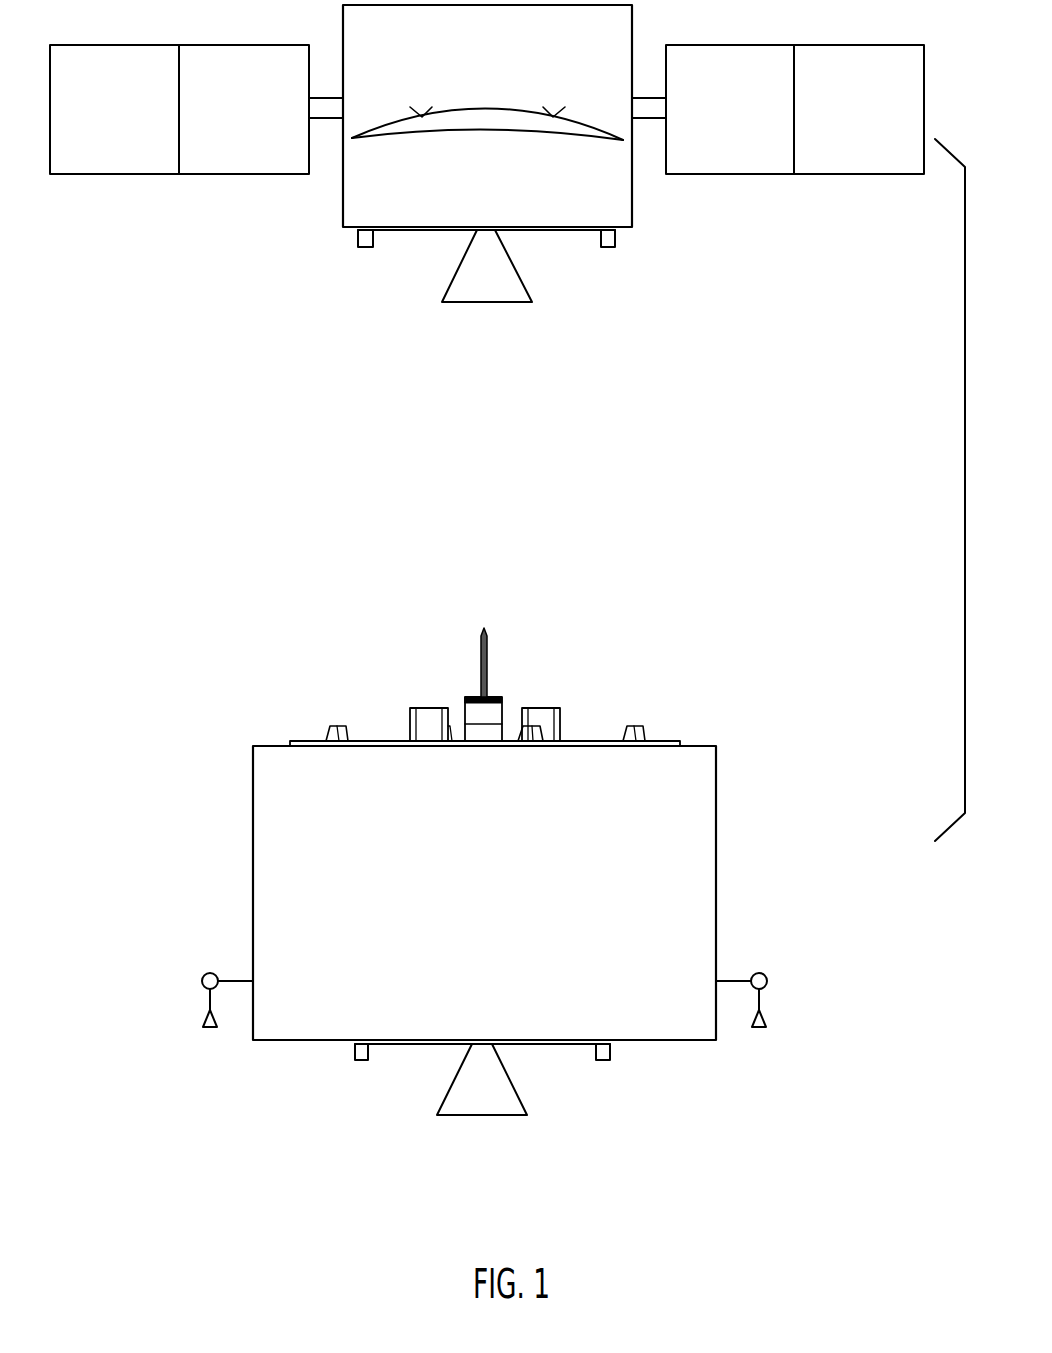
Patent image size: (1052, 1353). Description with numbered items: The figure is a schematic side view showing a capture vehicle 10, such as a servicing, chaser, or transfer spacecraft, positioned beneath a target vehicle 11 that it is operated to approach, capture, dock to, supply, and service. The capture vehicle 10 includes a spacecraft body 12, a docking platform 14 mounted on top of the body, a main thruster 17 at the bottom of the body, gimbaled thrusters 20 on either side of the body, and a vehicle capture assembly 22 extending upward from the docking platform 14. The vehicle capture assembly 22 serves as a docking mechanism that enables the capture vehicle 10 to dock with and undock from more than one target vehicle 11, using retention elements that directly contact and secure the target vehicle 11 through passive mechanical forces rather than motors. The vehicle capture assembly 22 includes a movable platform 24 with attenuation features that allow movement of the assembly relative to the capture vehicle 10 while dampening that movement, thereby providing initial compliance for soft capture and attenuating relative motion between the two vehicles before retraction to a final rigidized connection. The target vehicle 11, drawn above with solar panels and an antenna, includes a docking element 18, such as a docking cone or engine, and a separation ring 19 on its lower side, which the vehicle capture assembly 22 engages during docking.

The capture vehicle 10 is at (710, 575).
The target vehicle 11 is at (626, 207).
The spacecraft body 12 is at (683, 878).
The docking platform 14 is at (305, 740).
The main thruster 17 is at (510, 1102).
The docking element 18 is at (515, 288).
The separation ring 19 is at (607, 245).
The gimbaled thrusters 20 is at (207, 1000).
The vehicle capture assembly 22 is at (478, 642).
The movable platform 24 is at (490, 712).